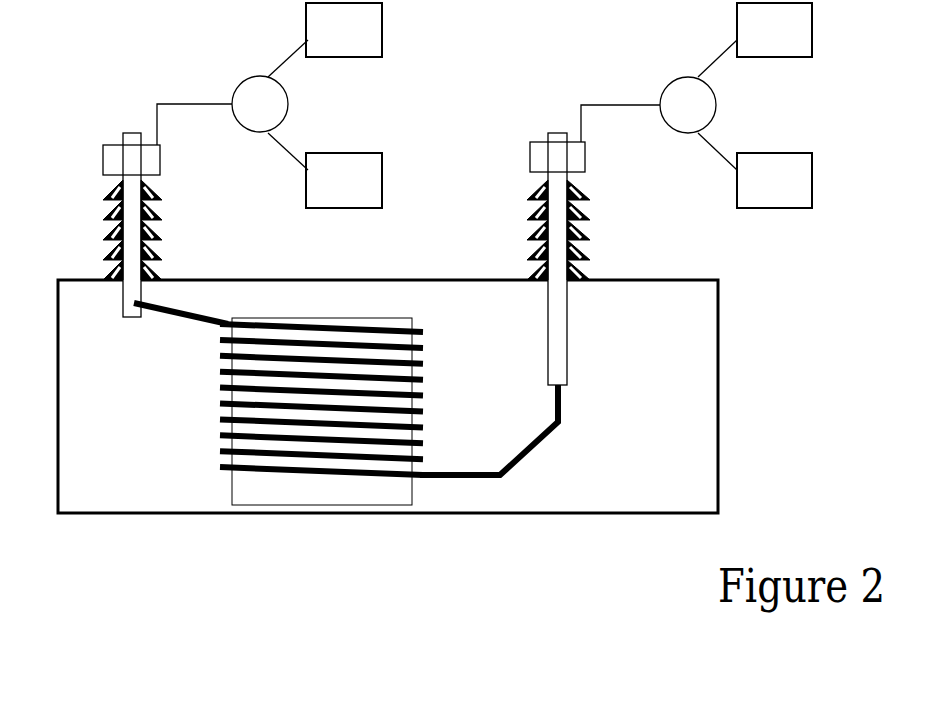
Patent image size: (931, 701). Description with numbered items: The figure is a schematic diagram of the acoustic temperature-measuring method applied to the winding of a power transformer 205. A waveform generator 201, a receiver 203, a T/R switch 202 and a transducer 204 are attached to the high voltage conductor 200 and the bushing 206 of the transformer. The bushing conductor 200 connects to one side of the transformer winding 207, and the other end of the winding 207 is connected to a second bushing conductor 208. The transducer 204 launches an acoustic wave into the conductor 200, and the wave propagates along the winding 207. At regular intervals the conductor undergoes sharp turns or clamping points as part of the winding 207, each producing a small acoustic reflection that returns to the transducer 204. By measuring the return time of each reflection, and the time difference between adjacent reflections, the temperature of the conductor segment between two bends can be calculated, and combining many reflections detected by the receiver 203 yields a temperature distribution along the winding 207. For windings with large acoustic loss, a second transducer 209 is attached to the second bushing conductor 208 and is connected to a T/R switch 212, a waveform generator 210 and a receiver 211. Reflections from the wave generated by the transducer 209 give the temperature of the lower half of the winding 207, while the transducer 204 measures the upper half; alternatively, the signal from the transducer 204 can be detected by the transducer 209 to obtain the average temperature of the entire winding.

The high voltage conductor 200 is at (134, 145).
The waveform generator 201 is at (344, 30).
The T/R switch 202 is at (255, 102).
The receiver 203 is at (344, 180).
The transducer 204 is at (112, 165).
The power transformer 205 is at (193, 513).
The bushing 206 is at (108, 247).
The transformer winding 207 is at (262, 346).
The second bushing conductor 208 is at (585, 201).
The second transducer 209 is at (538, 152).
The waveform generator 210 is at (774, 30).
The receiver 211 is at (774, 180).
The T/R switch 212 is at (683, 102).